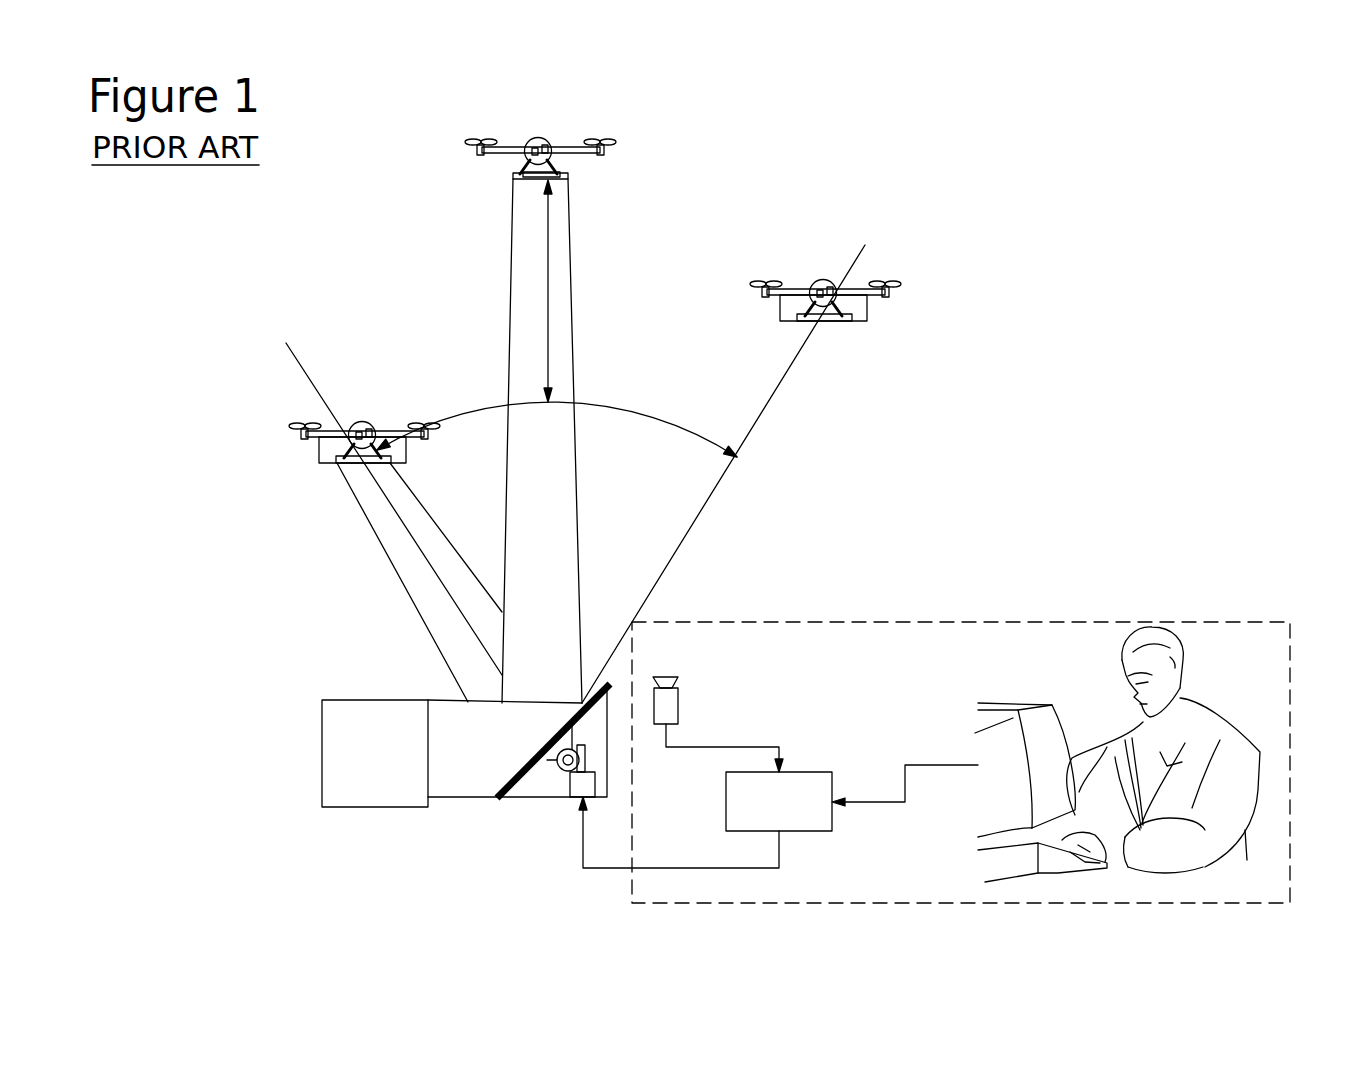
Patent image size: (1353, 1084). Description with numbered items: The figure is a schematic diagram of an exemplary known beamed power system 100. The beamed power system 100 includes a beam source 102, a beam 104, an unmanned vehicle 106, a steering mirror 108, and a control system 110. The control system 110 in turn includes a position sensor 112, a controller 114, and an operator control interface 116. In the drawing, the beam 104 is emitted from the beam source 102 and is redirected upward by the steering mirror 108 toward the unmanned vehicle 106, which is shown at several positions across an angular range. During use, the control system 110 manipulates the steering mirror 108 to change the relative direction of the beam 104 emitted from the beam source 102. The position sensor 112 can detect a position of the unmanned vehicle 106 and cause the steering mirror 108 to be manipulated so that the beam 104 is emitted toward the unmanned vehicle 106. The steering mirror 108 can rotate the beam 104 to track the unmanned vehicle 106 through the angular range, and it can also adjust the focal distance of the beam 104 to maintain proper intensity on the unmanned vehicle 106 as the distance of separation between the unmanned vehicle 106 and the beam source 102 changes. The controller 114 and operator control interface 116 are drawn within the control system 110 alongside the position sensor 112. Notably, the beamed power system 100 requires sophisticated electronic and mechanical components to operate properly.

The beamed power system 100 is at (1072, 270).
The beam source 102 is at (333, 753).
The beam 104 is at (563, 479).
The unmanned vehicle 106 is at (566, 144).
The steering mirror 108 is at (575, 782).
The control system 110 is at (1203, 620).
The position sensor 112 is at (668, 703).
The controller 114 is at (797, 784).
The operator control interface 116 is at (1040, 708).